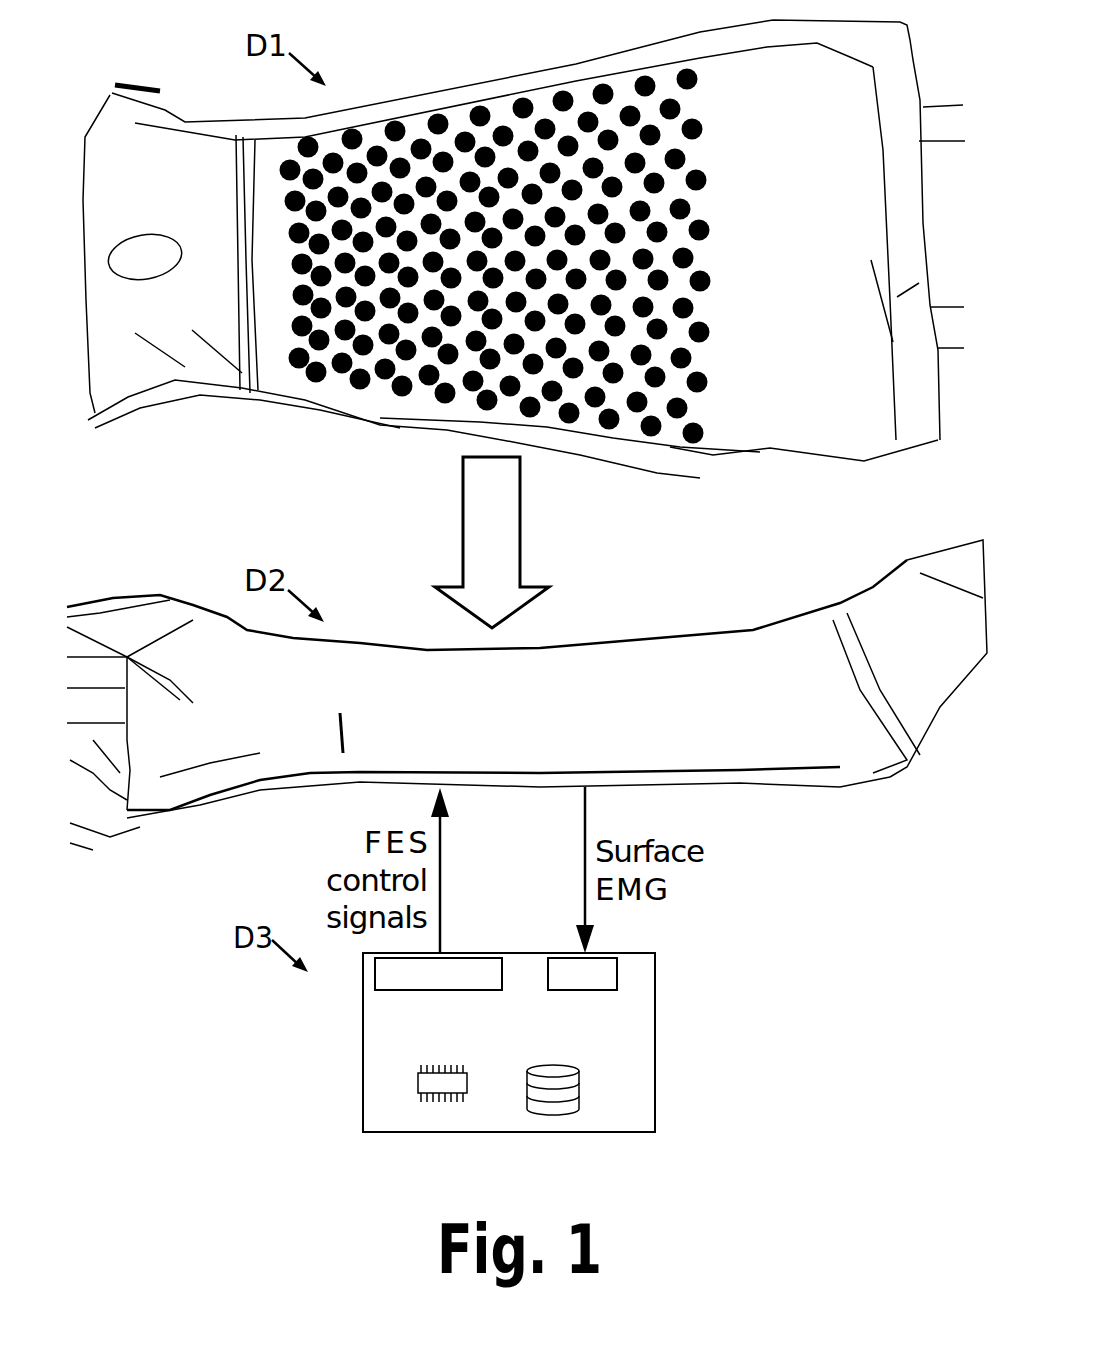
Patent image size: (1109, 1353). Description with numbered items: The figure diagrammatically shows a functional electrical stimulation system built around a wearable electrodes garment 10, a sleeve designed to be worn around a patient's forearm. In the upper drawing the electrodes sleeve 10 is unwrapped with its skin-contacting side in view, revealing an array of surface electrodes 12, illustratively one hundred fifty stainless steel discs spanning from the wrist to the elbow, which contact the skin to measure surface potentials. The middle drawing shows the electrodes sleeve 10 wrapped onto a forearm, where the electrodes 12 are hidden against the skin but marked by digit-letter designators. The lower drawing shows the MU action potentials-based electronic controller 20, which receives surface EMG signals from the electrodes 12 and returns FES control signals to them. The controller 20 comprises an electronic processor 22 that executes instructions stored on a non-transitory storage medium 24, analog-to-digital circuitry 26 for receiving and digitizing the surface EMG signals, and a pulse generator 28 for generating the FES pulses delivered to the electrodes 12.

The wearable electrodes garment 10 is at (492, 81).
The surface electrodes 12 is at (437, 397).
The MU action potentials-based electronic controller 20 is at (505, 1043).
The electronic processor 22 is at (437, 1088).
The non-transitory storage medium 24 is at (527, 1100).
The analog-to-digital circuitry 26 is at (618, 970).
The pulse generator 28 is at (375, 970).